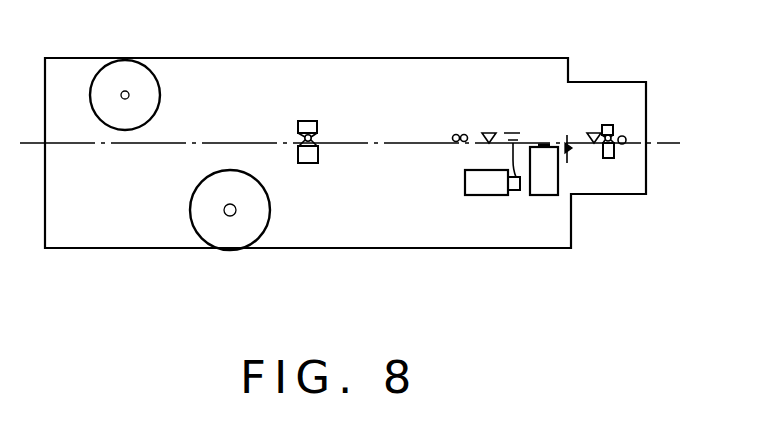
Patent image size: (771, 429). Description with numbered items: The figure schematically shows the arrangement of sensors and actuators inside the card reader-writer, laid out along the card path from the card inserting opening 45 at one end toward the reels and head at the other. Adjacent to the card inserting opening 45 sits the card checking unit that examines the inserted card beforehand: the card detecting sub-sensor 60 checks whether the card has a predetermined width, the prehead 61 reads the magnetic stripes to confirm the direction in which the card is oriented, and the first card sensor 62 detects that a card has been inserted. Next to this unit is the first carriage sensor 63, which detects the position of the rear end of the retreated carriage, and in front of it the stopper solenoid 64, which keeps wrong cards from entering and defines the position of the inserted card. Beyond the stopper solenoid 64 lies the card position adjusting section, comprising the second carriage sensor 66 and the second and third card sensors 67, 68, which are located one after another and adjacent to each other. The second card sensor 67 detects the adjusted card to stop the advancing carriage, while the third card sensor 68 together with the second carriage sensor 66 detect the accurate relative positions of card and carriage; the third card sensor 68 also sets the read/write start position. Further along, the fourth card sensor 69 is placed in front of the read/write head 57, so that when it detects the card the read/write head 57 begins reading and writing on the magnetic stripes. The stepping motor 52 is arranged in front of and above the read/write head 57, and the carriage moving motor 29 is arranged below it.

The card inserting opening 45 is at (650, 141).
The stepping motor 52 is at (128, 68).
The carriage moving motor 29 is at (243, 238).
The read/write head 57 is at (301, 124).
The fourth card sensor 69 is at (318, 136).
The third card sensor 68 is at (453, 134).
The second card sensor 67 is at (466, 134).
The second carriage sensor 66 is at (489, 143).
The stopper solenoid 64 is at (545, 185).
The first carriage sensor 63 is at (594, 143).
The first card sensor 62 is at (604, 128).
The prehead 61 is at (610, 125).
The card detecting sub-sensor 60 is at (625, 136).